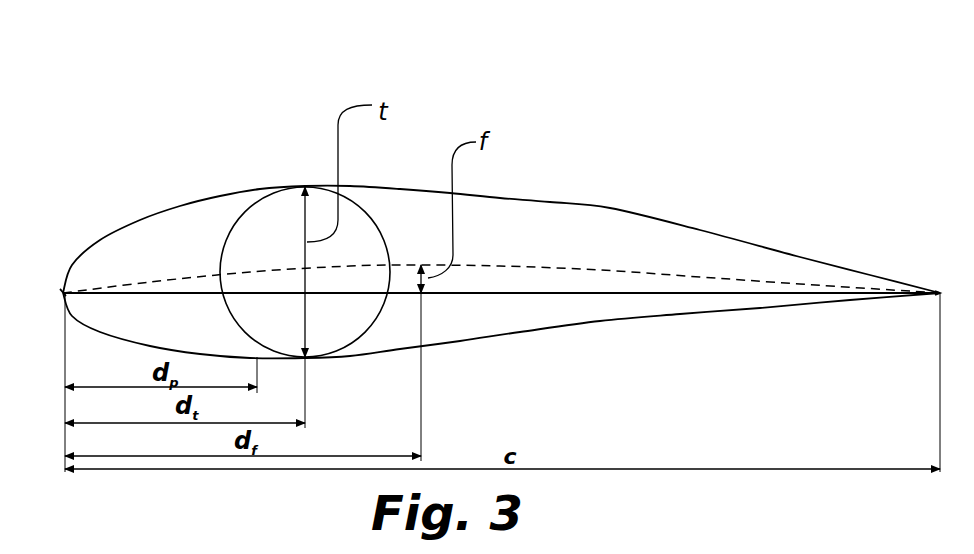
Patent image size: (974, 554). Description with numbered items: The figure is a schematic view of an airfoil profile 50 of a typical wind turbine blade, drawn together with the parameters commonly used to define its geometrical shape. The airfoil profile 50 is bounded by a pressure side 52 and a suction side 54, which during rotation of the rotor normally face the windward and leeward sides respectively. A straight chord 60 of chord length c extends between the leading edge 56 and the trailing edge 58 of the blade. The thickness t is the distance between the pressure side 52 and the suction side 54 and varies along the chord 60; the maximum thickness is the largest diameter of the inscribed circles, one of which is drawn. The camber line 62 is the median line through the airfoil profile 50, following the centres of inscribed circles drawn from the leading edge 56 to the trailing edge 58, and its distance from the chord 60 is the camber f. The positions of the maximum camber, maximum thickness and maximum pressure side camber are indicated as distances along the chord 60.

The airfoil profile 50 is at (485, 212).
The pressure side 52 is at (675, 316).
The suction side 54 is at (613, 207).
The leading edge 56 is at (63, 293).
The trailing edge 58 is at (940, 290).
The chord 60 is at (718, 293).
The camber line 62 is at (493, 263).